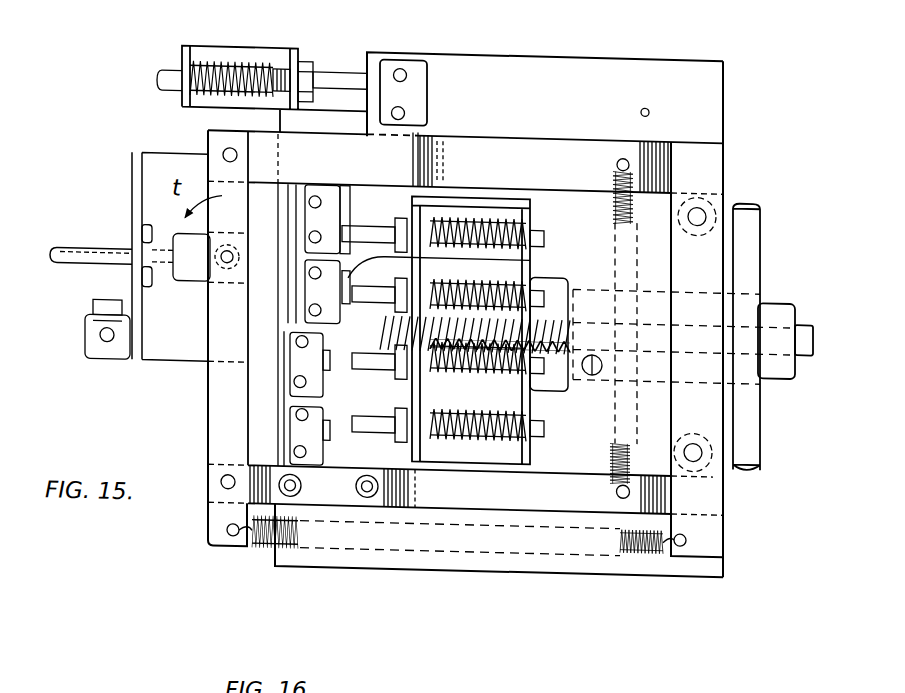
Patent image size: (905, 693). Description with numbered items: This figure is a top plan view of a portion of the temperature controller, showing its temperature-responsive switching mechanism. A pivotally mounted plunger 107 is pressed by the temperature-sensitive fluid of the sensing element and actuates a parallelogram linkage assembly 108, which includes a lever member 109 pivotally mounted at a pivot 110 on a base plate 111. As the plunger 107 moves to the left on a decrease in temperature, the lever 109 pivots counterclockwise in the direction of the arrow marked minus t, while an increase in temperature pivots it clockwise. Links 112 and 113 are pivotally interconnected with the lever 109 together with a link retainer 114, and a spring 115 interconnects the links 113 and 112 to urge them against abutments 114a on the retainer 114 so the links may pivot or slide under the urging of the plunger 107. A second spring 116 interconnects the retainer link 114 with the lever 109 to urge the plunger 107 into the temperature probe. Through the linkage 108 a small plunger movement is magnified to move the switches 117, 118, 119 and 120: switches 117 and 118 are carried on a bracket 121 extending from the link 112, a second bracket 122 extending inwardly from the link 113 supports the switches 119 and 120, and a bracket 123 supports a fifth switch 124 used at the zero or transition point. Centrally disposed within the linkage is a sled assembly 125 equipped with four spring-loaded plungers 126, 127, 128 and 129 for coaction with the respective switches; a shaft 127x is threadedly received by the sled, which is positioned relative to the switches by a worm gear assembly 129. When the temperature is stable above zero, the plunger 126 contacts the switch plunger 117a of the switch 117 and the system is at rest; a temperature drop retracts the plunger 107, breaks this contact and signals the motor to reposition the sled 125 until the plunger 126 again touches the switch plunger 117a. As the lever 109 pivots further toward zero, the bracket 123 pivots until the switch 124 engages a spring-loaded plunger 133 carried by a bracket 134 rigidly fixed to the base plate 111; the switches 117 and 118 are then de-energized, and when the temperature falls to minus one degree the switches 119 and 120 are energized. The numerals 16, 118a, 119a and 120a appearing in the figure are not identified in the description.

The base plate 16 is at (483, 566).
The plunger 107 is at (60, 243).
The parallelogram linkage assembly 108 is at (203, 381).
The lever member 109 is at (213, 423).
The pivot 110 is at (223, 316).
The base plate 111 is at (160, 158).
The link 112 is at (524, 127).
The link 113 is at (547, 473).
The link retainer 114 is at (708, 507).
The abutments 114a is at (732, 178).
The spring 115 is at (615, 196).
The second spring 116 is at (645, 539).
The switch 117 is at (322, 185).
The switch plunger 117a is at (350, 211).
The switch 118 is at (318, 294).
The connecting wire 118a is at (478, 256).
The switch 119 is at (309, 399).
The contact arm 119a is at (323, 359).
The switch 120 is at (348, 436).
The connecting wire 120a is at (323, 409).
The bracket 121 is at (277, 220).
The second bracket 122 is at (186, 523).
The bracket 123 is at (417, 122).
The fifth switch 124 is at (428, 73).
The sled assembly 125 is at (487, 188).
The spring-loaded plunger 126 is at (564, 316).
The spring-loaded plunger 127 is at (475, 335).
The shaft 127x is at (553, 334).
The spring-loaded plunger 128 is at (487, 376).
The spring-loaded plunger 129 is at (766, 229).
The spring-loaded plunger 133 is at (328, 74).
The bracket 134 is at (264, 33).